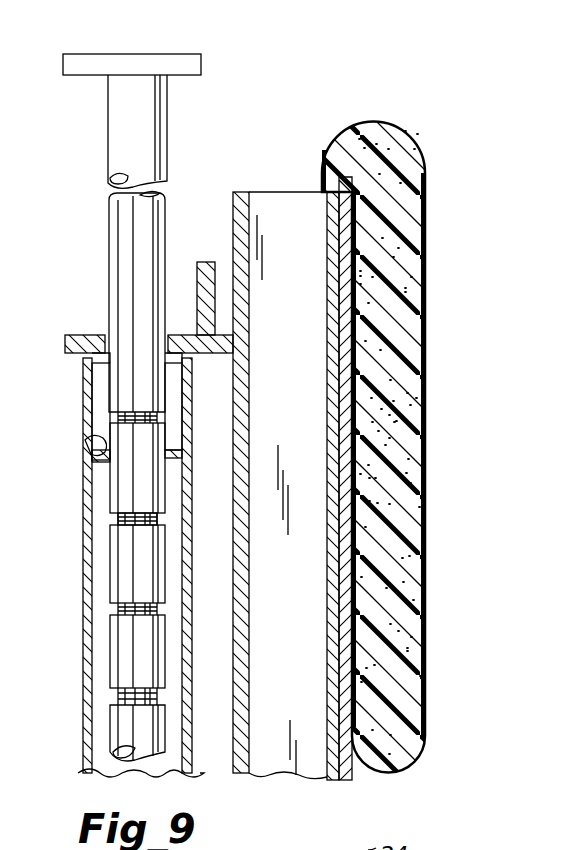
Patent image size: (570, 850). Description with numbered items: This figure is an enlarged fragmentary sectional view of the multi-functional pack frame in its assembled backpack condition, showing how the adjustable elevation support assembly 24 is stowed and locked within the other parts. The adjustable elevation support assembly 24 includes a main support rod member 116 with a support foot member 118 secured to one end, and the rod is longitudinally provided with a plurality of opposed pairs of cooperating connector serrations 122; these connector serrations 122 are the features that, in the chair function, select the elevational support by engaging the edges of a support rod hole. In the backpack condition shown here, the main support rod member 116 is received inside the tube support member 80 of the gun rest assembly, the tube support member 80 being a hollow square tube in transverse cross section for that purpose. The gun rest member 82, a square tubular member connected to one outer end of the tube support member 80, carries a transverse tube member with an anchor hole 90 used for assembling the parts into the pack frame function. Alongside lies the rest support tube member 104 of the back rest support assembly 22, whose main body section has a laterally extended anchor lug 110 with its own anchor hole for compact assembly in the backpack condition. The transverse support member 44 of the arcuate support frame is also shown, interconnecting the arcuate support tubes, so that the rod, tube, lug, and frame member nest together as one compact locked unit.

The support foot member 118 is at (183, 62).
The adjustable elevation support assembly 24 is at (183, 150).
The rest support tube member 104 is at (250, 207).
The back rest support assembly 22 is at (440, 240).
The transverse support member 44 is at (207, 262).
The main support rod member 116 is at (120, 265).
The anchor lug 110 is at (72, 356).
The gun rest member 82 is at (83, 430).
The anchor hole 90 is at (84, 456).
The connector serrations 122 is at (110, 519).
The tube support member 80 is at (83, 645).